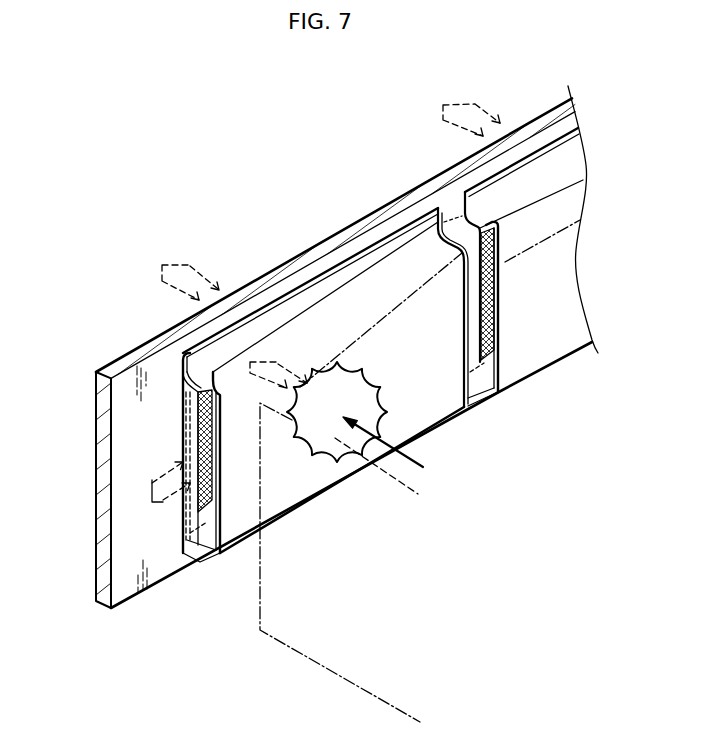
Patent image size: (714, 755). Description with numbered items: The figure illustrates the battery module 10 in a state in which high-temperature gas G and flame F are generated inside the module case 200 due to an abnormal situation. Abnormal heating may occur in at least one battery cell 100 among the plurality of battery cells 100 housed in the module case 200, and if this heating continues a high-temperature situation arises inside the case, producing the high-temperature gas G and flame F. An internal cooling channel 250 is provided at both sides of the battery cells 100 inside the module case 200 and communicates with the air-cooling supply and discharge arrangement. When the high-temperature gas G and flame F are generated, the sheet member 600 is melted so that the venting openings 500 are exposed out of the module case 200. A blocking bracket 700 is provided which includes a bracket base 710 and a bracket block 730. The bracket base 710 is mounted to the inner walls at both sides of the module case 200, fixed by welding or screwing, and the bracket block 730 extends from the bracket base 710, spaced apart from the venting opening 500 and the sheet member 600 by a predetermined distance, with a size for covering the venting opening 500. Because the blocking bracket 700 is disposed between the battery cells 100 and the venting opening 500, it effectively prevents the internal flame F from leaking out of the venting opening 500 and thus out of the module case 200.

The battery module 10 is at (183, 184).
The battery cell 100 is at (325, 672).
The module case 200 is at (115, 370).
The internal cooling channel 250 is at (247, 503).
The venting opening 500 is at (200, 437).
The sheet member 600 is at (190, 418).
The blocking bracket 700 is at (307, 345).
The bracket base 710 is at (333, 285).
The bracket block 730 is at (390, 312).
The flame F is at (420, 462).
The high-temperature gas G is at (318, 297).